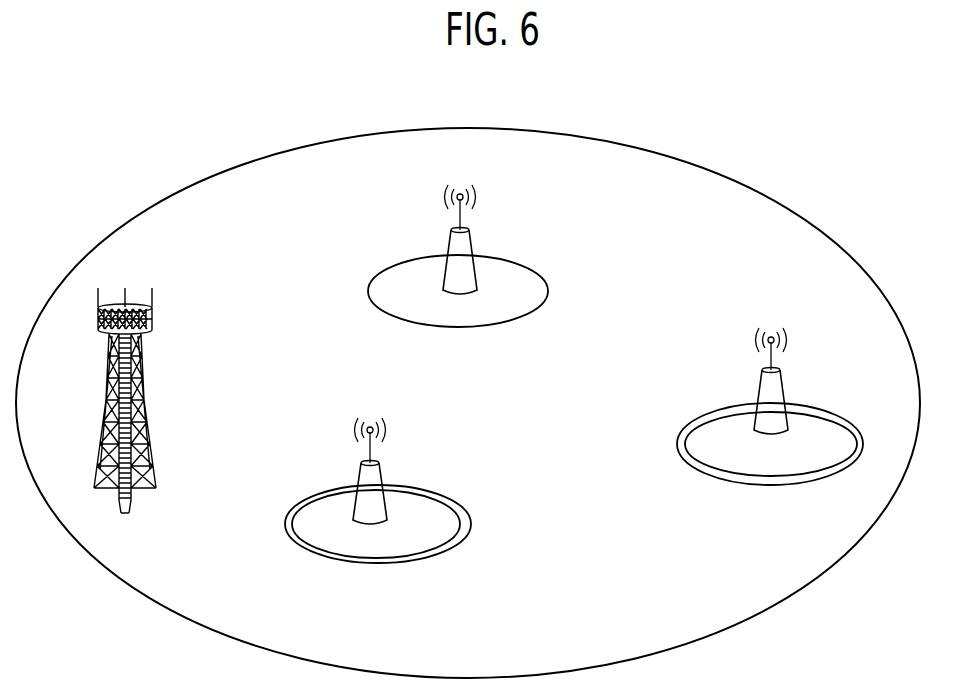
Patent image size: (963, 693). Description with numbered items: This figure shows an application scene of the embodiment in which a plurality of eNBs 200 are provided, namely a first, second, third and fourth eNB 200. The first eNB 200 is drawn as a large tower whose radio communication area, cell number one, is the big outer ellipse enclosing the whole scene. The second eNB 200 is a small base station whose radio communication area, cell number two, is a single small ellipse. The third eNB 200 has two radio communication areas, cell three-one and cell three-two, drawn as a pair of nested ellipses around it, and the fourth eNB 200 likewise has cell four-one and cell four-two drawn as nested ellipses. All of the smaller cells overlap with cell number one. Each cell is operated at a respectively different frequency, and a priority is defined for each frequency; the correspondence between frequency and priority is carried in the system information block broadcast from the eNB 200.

The eNB 200 is at (441, 354).